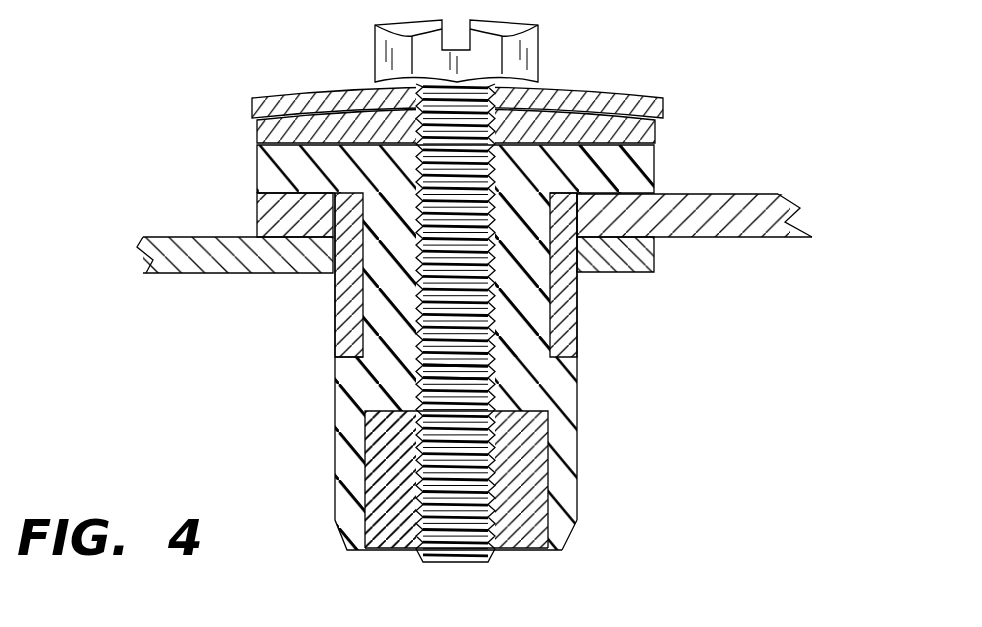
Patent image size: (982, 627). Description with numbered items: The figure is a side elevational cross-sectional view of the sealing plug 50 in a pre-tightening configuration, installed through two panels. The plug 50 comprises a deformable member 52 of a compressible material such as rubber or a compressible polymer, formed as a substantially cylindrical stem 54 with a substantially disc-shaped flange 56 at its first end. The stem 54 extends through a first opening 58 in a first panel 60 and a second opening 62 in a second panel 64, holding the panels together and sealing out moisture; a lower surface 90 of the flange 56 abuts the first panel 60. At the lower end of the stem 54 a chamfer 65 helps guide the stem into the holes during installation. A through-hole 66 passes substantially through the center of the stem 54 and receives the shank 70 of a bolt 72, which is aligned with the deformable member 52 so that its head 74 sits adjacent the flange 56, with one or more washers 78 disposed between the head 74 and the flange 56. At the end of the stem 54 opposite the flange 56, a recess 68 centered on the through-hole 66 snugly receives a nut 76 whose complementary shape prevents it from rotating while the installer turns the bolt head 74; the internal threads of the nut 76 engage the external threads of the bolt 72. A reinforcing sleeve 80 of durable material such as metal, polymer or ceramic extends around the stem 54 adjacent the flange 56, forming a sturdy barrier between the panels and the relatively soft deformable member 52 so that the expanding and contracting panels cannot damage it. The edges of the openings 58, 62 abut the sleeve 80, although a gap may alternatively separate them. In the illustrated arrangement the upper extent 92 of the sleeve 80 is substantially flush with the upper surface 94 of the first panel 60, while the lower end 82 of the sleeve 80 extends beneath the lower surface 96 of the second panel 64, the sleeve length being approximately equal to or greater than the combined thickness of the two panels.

The sealing plug 50 is at (745, 86).
The deformable member 52 is at (557, 392).
The stem 54 is at (358, 390).
The flange 56 is at (630, 172).
The first opening 58 is at (350, 193).
The first panel 60 is at (780, 225).
The second opening 62 is at (577, 283).
The second panel 64 is at (207, 242).
The chamfer 65 is at (575, 527).
The through-hole 66 is at (493, 375).
The recess 68 is at (518, 548).
The shank 70 is at (443, 468).
The bolt 72 is at (417, 302).
The head 74 is at (380, 44).
The nut 76 is at (382, 498).
The washers 78 is at (257, 132).
The reinforcing sleeve 80 is at (340, 290).
The lower end 82 is at (343, 362).
The lower surface 90 is at (618, 197).
The upper extent 92 is at (558, 197).
The upper surface 94 is at (777, 195).
The lower surface 96 is at (178, 273).